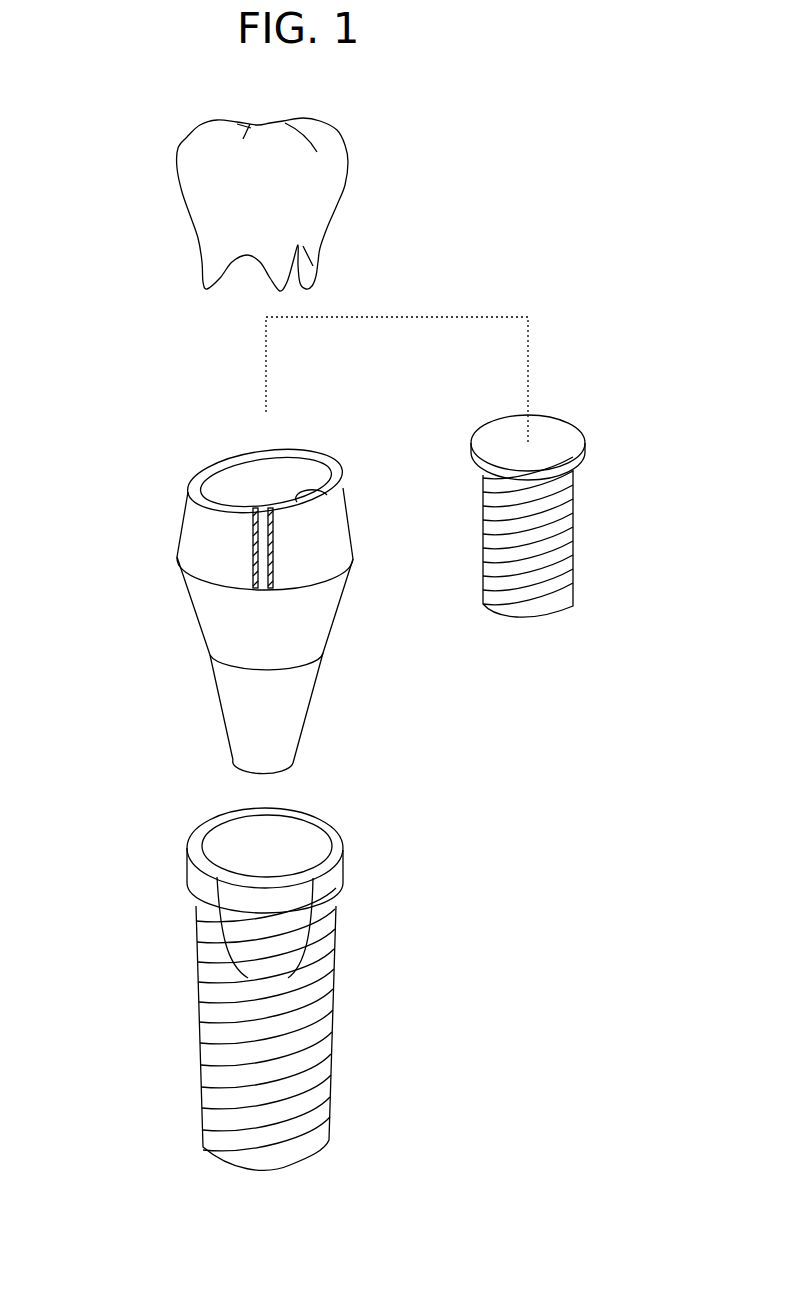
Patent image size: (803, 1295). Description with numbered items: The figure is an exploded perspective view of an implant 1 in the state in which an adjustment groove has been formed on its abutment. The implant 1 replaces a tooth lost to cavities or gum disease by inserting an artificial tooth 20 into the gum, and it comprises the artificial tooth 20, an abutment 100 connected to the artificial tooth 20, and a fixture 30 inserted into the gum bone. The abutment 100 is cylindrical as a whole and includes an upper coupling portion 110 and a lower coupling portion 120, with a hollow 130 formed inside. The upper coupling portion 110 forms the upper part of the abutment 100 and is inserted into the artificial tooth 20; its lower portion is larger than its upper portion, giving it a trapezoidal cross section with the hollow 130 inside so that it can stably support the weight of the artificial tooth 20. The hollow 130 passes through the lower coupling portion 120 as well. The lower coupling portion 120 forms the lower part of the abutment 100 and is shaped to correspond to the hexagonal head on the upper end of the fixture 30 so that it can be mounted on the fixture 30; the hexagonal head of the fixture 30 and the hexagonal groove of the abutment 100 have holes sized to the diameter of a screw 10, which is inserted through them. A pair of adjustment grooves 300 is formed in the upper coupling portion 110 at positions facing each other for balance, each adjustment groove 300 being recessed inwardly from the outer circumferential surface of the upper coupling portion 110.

The implant 1 is at (116, 420).
The screw 10 is at (570, 510).
The artificial tooth 20 is at (335, 172).
The fixture 30 is at (302, 1005).
The abutment 100 is at (235, 627).
The upper coupling portion 110 is at (188, 494).
The lower coupling portion 120 is at (303, 712).
The hollow 130 is at (320, 496).
The adjustment groove 300 is at (270, 553).